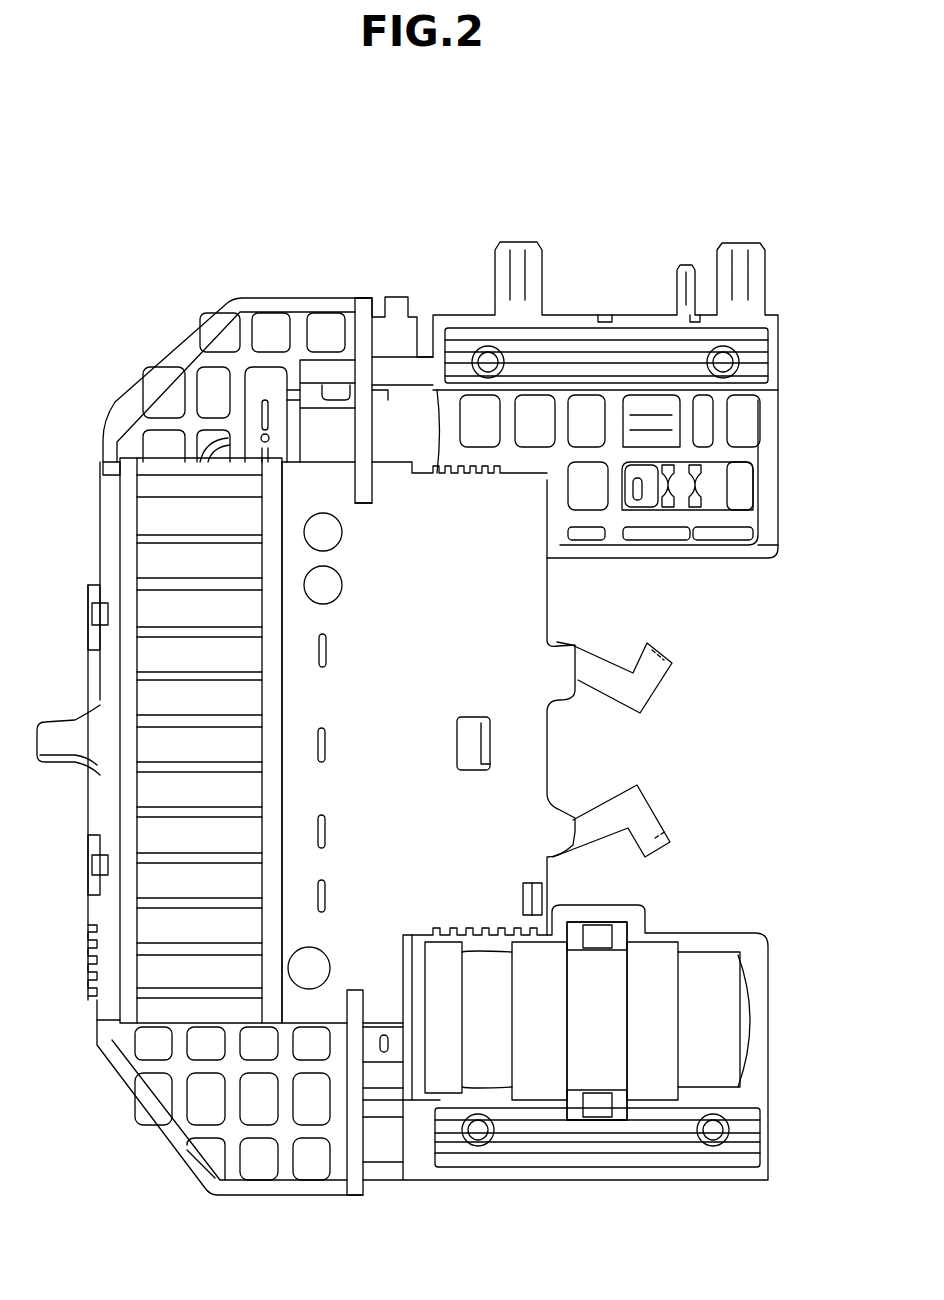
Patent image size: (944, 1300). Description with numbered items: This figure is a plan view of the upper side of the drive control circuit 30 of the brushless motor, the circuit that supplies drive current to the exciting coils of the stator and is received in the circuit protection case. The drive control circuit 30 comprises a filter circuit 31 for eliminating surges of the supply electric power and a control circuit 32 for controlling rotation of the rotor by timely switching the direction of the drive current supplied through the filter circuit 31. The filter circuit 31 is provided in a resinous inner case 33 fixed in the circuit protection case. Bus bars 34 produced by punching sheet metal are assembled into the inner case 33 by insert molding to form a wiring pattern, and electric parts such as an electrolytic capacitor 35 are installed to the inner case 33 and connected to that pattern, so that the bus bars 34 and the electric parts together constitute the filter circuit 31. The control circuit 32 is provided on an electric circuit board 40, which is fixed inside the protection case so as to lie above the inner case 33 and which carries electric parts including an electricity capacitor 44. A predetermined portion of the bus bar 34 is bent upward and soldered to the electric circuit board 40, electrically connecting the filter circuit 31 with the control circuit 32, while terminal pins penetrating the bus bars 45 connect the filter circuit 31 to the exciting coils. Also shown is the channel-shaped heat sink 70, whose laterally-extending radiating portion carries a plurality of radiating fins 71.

The drive control circuit 30 is at (408, 212).
The filter circuit 31 is at (272, 292).
The control circuit 32 is at (562, 592).
The inner case 33 is at (780, 440).
The bus bar 34 is at (738, 495).
The electrolytic capacitor 35 is at (397, 450).
The electric circuit board 40 is at (515, 720).
The electricity capacitor 44 is at (330, 532).
The bus bar 45 is at (640, 677).
The heat sink 70 is at (160, 694).
The radiating fin 71 is at (180, 585).